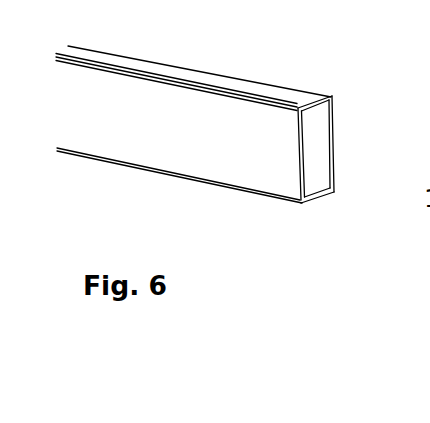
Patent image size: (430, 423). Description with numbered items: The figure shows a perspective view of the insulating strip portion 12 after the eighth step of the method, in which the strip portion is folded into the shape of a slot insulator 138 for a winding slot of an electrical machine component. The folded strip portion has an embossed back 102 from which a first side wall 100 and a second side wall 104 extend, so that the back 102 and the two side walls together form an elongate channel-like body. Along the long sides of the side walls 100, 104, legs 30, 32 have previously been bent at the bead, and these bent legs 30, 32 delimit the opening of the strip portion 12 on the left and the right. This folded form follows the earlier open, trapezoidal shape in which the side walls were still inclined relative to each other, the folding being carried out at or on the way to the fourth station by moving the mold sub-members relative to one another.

The insulating strip portion 12 is at (112, 148).
The leg 30 is at (290, 103).
The leg 32 is at (295, 92).
The first side wall 100 is at (223, 156).
The back 102 is at (313, 200).
The second side wall 104 is at (333, 143).
The slot insulator 138 is at (153, 182).